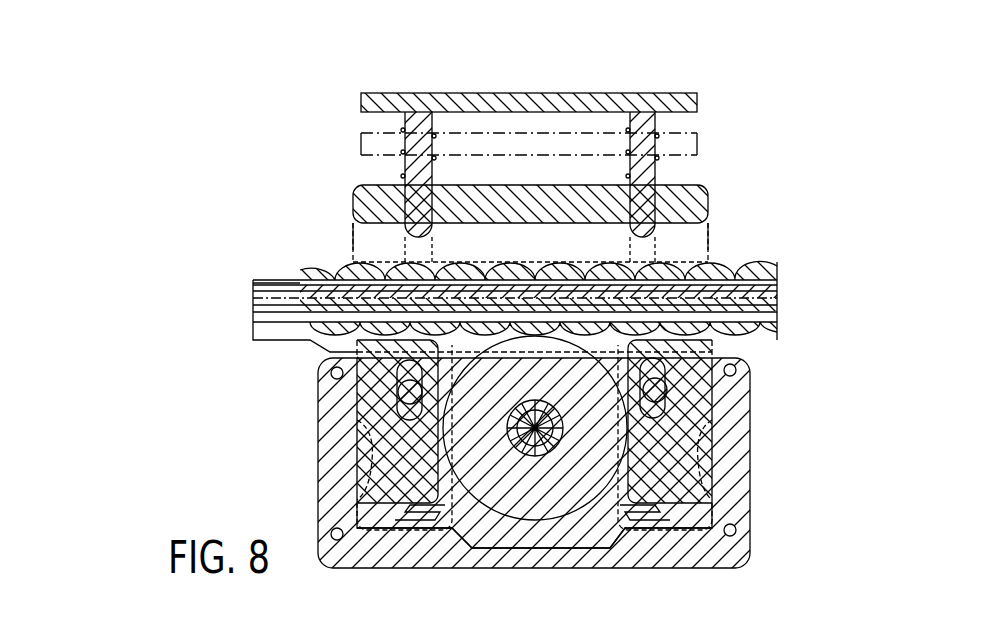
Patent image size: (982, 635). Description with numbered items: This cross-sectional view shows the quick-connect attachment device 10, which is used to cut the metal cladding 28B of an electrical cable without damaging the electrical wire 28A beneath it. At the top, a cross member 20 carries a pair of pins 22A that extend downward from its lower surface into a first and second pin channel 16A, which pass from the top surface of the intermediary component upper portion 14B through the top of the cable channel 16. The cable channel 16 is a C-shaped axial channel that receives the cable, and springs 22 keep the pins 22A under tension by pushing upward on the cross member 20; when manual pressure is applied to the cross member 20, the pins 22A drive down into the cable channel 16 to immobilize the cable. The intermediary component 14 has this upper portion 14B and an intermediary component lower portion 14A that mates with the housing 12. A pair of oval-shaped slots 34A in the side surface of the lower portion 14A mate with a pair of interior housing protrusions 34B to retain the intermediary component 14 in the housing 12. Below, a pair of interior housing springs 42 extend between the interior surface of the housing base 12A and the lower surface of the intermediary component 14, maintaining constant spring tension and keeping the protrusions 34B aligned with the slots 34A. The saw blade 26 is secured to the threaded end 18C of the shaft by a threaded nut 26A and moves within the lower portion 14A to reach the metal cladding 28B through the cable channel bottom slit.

The quick-connect attachment device 10 is at (730, 60).
The housing 12 is at (333, 497).
The housing base 12A is at (528, 576).
The intermediary component 14 is at (370, 368).
The intermediary component lower portion 14A is at (410, 435).
The intermediary component upper portion 14B is at (370, 282).
The cable channel 16 is at (682, 237).
The pin channel 16A is at (462, 209).
The threaded end 18C is at (781, 450).
The cross member 20 is at (447, 93).
The springs 22 is at (405, 180).
The pins 22A is at (420, 150).
The saw blade 26 is at (540, 510).
The threaded nut 26A is at (676, 455).
The electrical wire 28A is at (252, 298).
The metal cladding 28B is at (300, 268).
The oval-shaped slots 34A is at (395, 373).
The interior housing protrusions 34B is at (405, 400).
The interior housing springs 42 is at (425, 513).